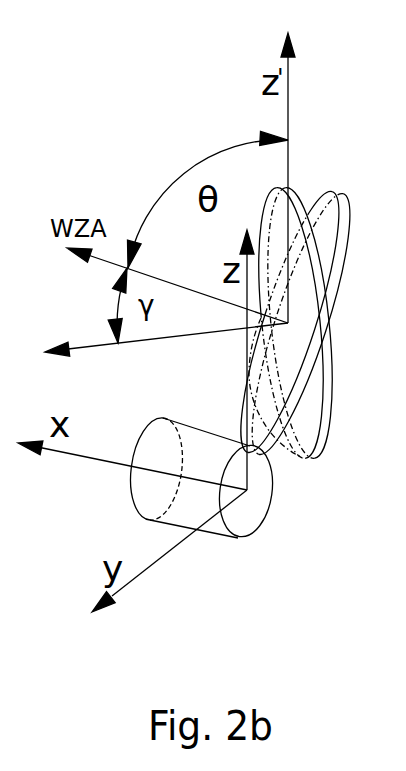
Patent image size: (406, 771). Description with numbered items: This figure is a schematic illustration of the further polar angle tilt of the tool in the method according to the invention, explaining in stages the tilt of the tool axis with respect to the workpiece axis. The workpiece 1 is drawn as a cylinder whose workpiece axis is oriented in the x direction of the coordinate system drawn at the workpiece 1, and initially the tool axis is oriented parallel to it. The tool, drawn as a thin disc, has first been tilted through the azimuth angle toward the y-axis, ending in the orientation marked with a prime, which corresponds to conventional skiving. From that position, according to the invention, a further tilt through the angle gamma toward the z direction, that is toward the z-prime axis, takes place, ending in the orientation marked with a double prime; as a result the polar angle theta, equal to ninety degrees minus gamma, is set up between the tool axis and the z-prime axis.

The workpiece 1 is at (177, 518).